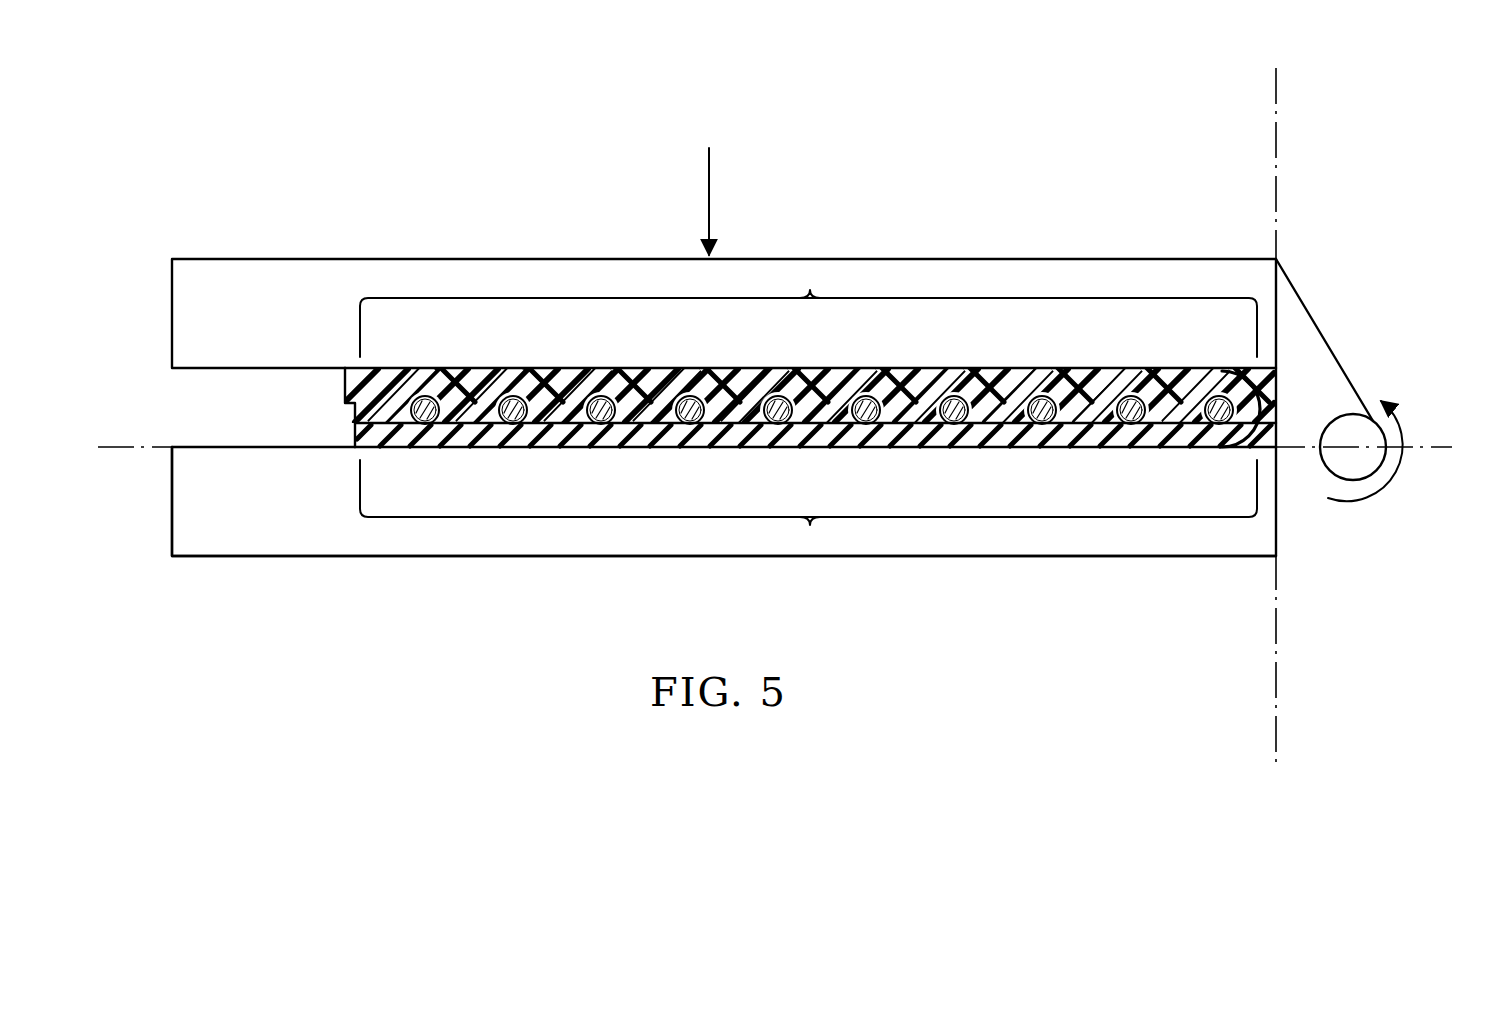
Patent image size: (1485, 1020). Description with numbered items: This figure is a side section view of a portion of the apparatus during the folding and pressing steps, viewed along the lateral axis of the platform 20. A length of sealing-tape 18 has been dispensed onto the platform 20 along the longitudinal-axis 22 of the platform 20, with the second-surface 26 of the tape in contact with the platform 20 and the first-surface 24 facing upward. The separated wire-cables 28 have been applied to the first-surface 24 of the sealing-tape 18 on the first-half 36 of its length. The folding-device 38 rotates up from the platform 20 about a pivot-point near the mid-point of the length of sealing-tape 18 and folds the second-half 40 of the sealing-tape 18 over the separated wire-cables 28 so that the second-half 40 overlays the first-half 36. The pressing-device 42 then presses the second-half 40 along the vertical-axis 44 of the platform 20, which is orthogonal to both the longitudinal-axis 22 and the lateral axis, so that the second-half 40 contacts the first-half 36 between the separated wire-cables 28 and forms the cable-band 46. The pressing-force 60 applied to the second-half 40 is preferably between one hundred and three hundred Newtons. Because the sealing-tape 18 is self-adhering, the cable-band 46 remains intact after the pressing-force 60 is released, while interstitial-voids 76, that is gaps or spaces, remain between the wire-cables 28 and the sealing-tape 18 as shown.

The sealing-tape 18 is at (734, 411).
The platform 20 is at (170, 508).
The longitudinal-axis 22 is at (1452, 449).
The first-surface 24 is at (753, 427).
The second-surface 26 is at (639, 452).
The wire-cables 28 is at (945, 420).
The first-half 36 is at (810, 519).
The folding-device 38 is at (1065, 258).
The second-half 40 is at (811, 296).
The pressing-device 42 is at (955, 258).
The vertical-axis 44 is at (1274, 690).
The cable-band 46 is at (320, 382).
The pressing-force 60 is at (709, 195).
The interstitial-voids 76 is at (1110, 425).